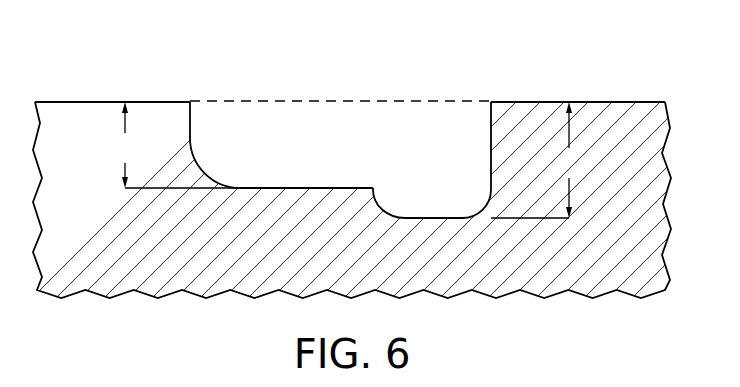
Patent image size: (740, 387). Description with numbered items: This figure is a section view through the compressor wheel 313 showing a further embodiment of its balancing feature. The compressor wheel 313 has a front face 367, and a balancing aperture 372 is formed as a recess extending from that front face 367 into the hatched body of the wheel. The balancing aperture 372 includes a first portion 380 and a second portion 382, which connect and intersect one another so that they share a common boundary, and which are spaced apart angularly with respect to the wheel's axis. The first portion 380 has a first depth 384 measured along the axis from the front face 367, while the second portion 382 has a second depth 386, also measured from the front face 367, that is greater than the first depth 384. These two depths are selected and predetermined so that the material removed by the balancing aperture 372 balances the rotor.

The compressor wheel 313 is at (635, 129).
The front face 367 is at (600, 100).
The balancing aperture 372 is at (320, 125).
The first portion 380 is at (250, 112).
The second portion 382 is at (430, 207).
The first depth 384 is at (169, 145).
The second depth 386 is at (542, 160).